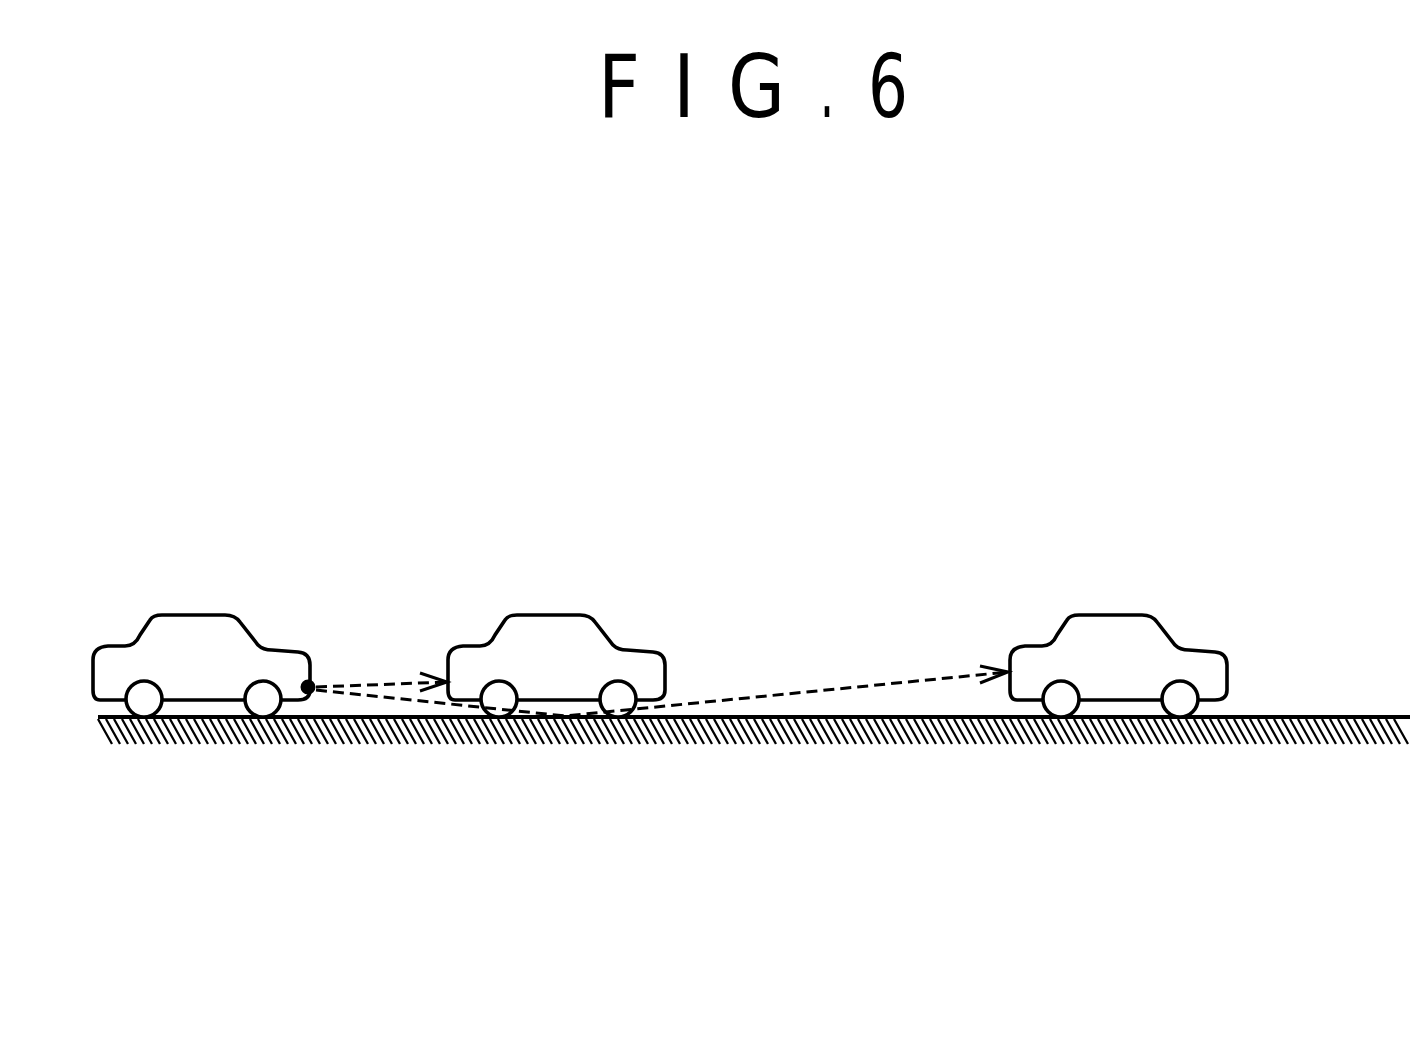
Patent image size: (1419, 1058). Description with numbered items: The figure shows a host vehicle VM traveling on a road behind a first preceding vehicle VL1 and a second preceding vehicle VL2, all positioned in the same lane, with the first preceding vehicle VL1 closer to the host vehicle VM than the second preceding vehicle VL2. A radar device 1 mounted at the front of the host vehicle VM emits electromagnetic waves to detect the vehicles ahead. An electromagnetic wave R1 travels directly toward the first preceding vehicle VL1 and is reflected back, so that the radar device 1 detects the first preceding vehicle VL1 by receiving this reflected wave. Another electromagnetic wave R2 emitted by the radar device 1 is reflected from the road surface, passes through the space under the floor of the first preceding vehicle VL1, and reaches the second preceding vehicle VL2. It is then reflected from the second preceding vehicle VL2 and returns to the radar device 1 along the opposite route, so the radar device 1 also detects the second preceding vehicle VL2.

The host vehicle VM is at (222, 616).
The first preceding vehicle VL1 is at (577, 616).
The second preceding vehicle VL2 is at (1130, 613).
The electromagnetic wave R1 is at (370, 682).
The electromagnetic wave R2 is at (824, 688).
The radar device 1 is at (310, 692).